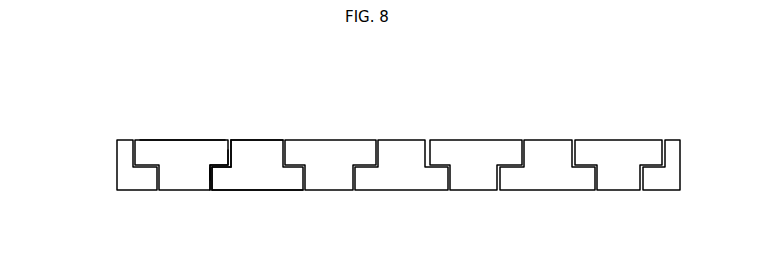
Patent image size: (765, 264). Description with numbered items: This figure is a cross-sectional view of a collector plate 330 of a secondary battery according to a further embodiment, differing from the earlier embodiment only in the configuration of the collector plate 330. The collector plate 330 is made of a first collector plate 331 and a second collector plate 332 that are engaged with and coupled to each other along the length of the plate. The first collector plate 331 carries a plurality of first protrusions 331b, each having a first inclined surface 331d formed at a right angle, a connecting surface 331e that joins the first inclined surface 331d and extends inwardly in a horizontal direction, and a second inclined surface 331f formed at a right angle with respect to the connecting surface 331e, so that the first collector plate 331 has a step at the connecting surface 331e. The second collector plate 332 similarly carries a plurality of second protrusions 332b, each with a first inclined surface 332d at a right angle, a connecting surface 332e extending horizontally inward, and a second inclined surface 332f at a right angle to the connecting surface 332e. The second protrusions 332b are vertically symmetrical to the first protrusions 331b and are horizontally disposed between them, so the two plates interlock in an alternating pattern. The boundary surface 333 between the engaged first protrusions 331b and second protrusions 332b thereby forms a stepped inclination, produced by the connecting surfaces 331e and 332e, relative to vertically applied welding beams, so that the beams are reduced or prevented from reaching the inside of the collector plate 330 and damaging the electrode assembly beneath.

The collector plate 330 is at (370, 165).
The first collector plate 331 is at (194, 132).
The first protrusion 331b is at (153, 150).
The first inclined surface 331d is at (232, 141).
The connecting surface 331e is at (214, 178).
The second inclined surface 331f is at (207, 168).
The second collector plate 332 is at (243, 175).
The second protrusion 332b is at (287, 183).
The first inclined surface 332d is at (235, 155).
The connecting surface 332e is at (229, 170).
The second inclined surface 332f is at (213, 186).
The boundary surface 333 is at (131, 138).